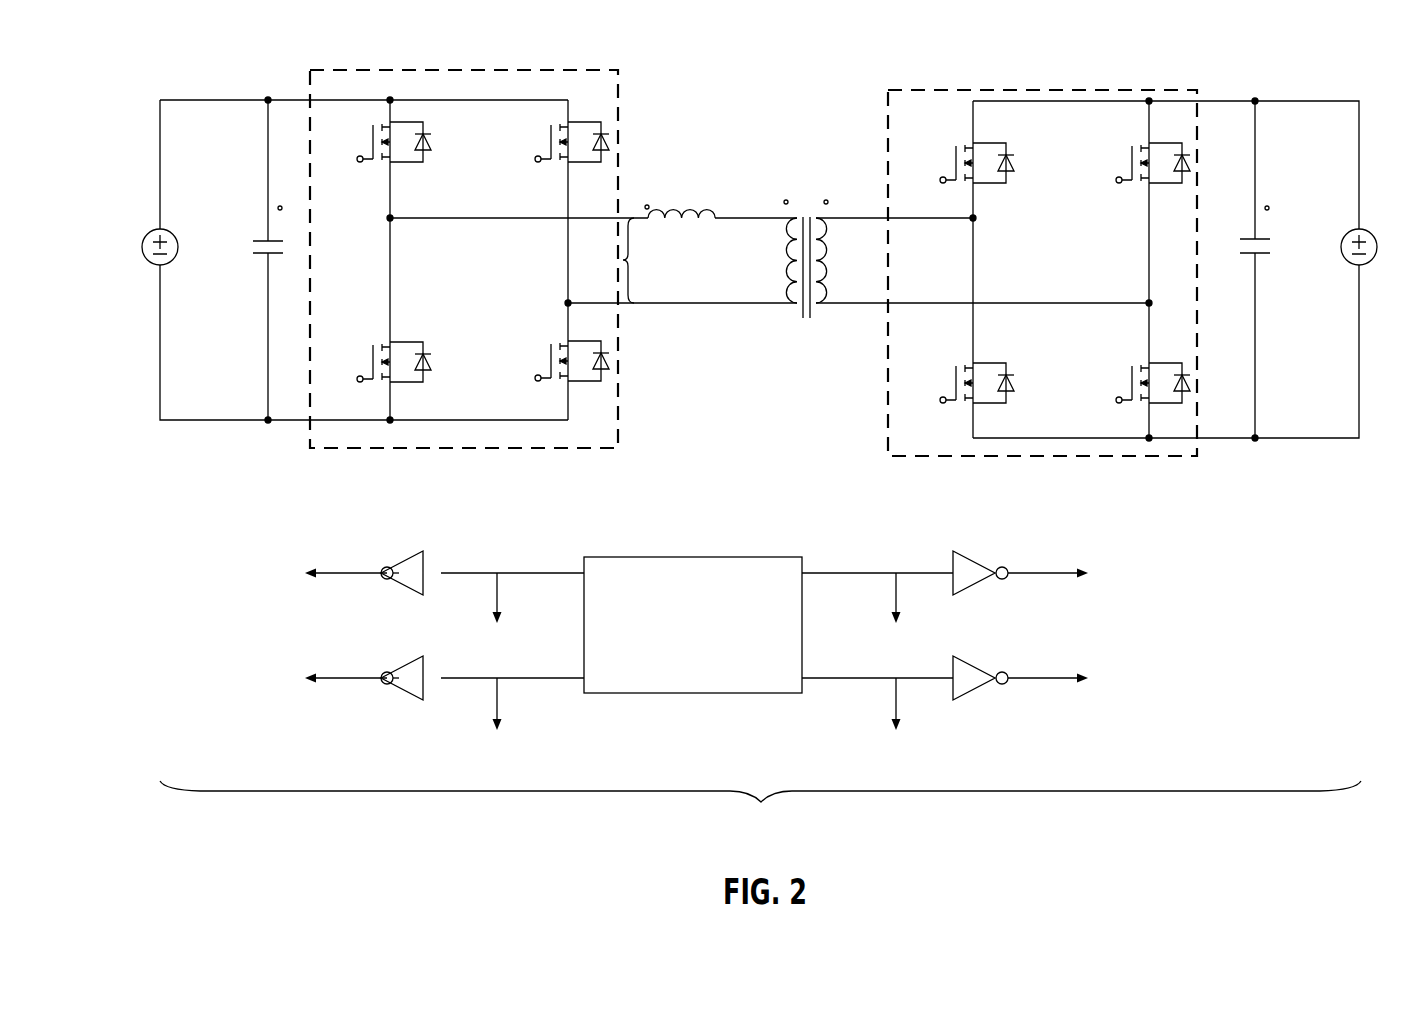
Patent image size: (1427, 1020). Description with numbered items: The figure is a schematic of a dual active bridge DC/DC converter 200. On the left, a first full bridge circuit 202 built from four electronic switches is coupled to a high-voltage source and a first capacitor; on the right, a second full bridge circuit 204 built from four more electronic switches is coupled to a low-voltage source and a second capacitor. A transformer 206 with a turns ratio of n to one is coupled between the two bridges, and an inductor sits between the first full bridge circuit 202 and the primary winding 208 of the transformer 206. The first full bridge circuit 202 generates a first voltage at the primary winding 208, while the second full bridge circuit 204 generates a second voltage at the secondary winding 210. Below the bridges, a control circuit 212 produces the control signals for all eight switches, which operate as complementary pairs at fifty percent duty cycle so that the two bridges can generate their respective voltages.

The dual active bridge DC/DC converter 200 is at (1268, 53).
The first full bridge circuit 202 is at (399, 70).
The second full bridge circuit 204 is at (1112, 90).
The transformer 206 is at (802, 206).
The primary winding 208 is at (792, 255).
The secondary winding 210 is at (822, 272).
The control circuit 212 is at (655, 557).